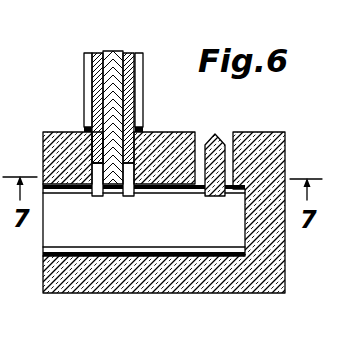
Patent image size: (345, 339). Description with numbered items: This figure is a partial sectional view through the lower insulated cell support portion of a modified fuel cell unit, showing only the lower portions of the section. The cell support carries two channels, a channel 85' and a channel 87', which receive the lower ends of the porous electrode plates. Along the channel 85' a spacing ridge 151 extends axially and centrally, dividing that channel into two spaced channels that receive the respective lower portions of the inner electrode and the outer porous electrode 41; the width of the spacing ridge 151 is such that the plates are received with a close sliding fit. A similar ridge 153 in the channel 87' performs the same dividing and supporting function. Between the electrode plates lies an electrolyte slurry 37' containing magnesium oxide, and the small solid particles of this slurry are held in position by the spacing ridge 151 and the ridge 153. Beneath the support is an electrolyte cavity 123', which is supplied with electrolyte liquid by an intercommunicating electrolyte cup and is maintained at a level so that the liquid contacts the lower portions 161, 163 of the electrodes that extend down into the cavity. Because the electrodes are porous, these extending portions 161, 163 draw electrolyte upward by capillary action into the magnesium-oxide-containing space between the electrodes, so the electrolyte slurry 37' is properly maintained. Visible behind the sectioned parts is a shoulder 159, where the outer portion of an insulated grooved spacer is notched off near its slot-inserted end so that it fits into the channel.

The electrolyte slurry 37' is at (120, 106).
The outer porous electrode 41 is at (129, 96).
The shoulder 159 is at (84, 128).
The spacing ridge 151 is at (154, 137).
The ridge 153 is at (215, 134).
The channel 87' is at (181, 212).
The channel 85' is at (55, 149).
The lower portion of electrode 161 is at (94, 196).
The lower portion of electrode 163 is at (128, 196).
The electrolyte cavity 123' is at (144, 220).